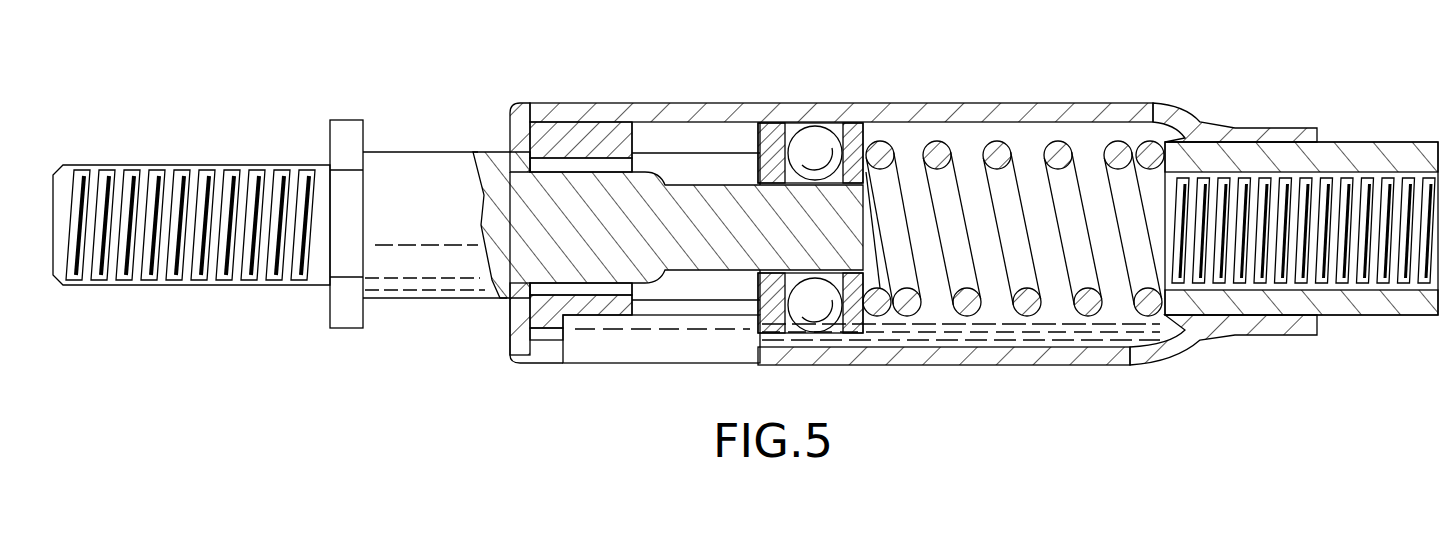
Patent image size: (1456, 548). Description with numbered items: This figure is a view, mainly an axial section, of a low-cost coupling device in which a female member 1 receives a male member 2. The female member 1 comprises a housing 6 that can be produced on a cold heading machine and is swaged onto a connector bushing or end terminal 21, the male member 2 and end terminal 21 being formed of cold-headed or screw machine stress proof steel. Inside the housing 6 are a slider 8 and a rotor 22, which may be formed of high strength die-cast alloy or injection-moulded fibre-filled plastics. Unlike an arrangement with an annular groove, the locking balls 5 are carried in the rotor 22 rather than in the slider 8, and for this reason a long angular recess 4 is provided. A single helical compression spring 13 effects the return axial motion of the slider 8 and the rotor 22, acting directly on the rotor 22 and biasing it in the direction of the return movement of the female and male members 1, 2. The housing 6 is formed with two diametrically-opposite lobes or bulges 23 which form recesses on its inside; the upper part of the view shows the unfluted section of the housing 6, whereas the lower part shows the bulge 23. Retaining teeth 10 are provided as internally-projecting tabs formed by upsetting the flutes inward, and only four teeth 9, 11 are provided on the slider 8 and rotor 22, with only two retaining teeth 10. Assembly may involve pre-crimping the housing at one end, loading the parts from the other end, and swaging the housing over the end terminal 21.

The female member 1 is at (1145, 108).
The male member 2 is at (418, 166).
The long angular recess 4 is at (712, 272).
The locking balls 5 is at (813, 140).
The housing 6 is at (1054, 106).
The slider 8 is at (540, 137).
The teeth 9 is at (605, 137).
The retaining teeth 10 is at (610, 345).
The teeth 11 is at (695, 138).
The helical compression spring 13 is at (999, 145).
The end terminal 21 is at (1360, 157).
The rotor 22 is at (747, 140).
The bulge 23 is at (987, 367).